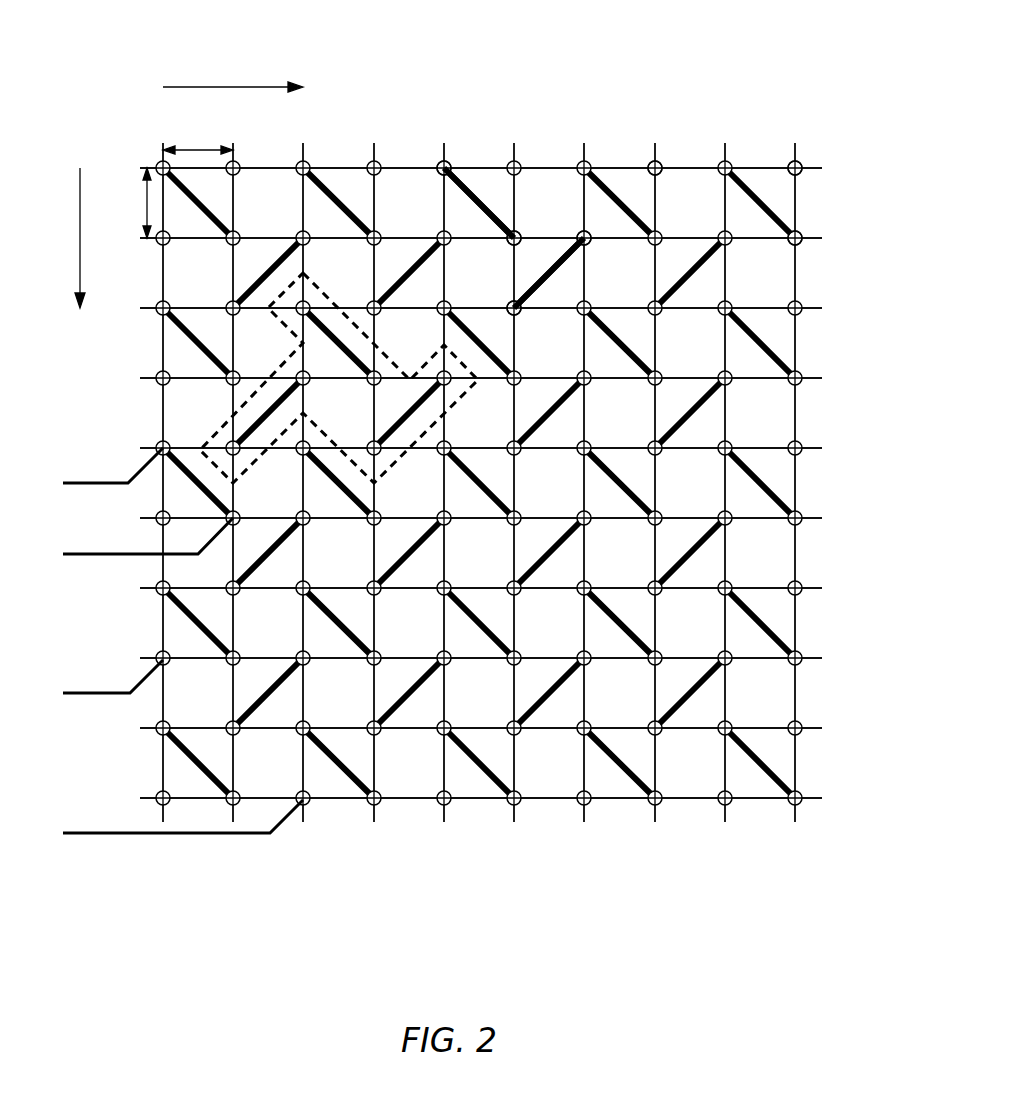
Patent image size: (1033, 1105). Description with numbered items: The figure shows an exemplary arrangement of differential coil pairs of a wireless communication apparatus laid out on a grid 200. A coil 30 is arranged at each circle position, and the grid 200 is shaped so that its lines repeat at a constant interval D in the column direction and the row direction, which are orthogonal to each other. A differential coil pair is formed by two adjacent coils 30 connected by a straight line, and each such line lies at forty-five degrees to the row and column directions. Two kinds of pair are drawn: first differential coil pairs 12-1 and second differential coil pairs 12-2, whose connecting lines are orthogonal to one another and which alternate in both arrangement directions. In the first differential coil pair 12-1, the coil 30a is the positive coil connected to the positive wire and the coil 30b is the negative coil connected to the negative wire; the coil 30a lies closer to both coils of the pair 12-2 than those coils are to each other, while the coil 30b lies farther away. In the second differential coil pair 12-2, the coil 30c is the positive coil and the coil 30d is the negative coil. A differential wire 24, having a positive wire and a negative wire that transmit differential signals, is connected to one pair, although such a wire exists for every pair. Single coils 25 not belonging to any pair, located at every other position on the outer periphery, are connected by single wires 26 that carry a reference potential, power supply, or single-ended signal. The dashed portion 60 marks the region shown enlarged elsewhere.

The grid 200 is at (468, 936).
The first differential coil pair 12-1 is at (472, 195).
The second differential coil pair 12-2 is at (556, 266).
The single coil 25 is at (660, 164).
The coil 30 is at (800, 243).
The coil 30a is at (516, 231).
The coil 30b is at (440, 165).
The coil 30c is at (519, 312).
The coil 30d is at (590, 233).
The differential wire 24 is at (61, 481).
The single wire 26 is at (90, 693).
The portion 60 is at (221, 427).